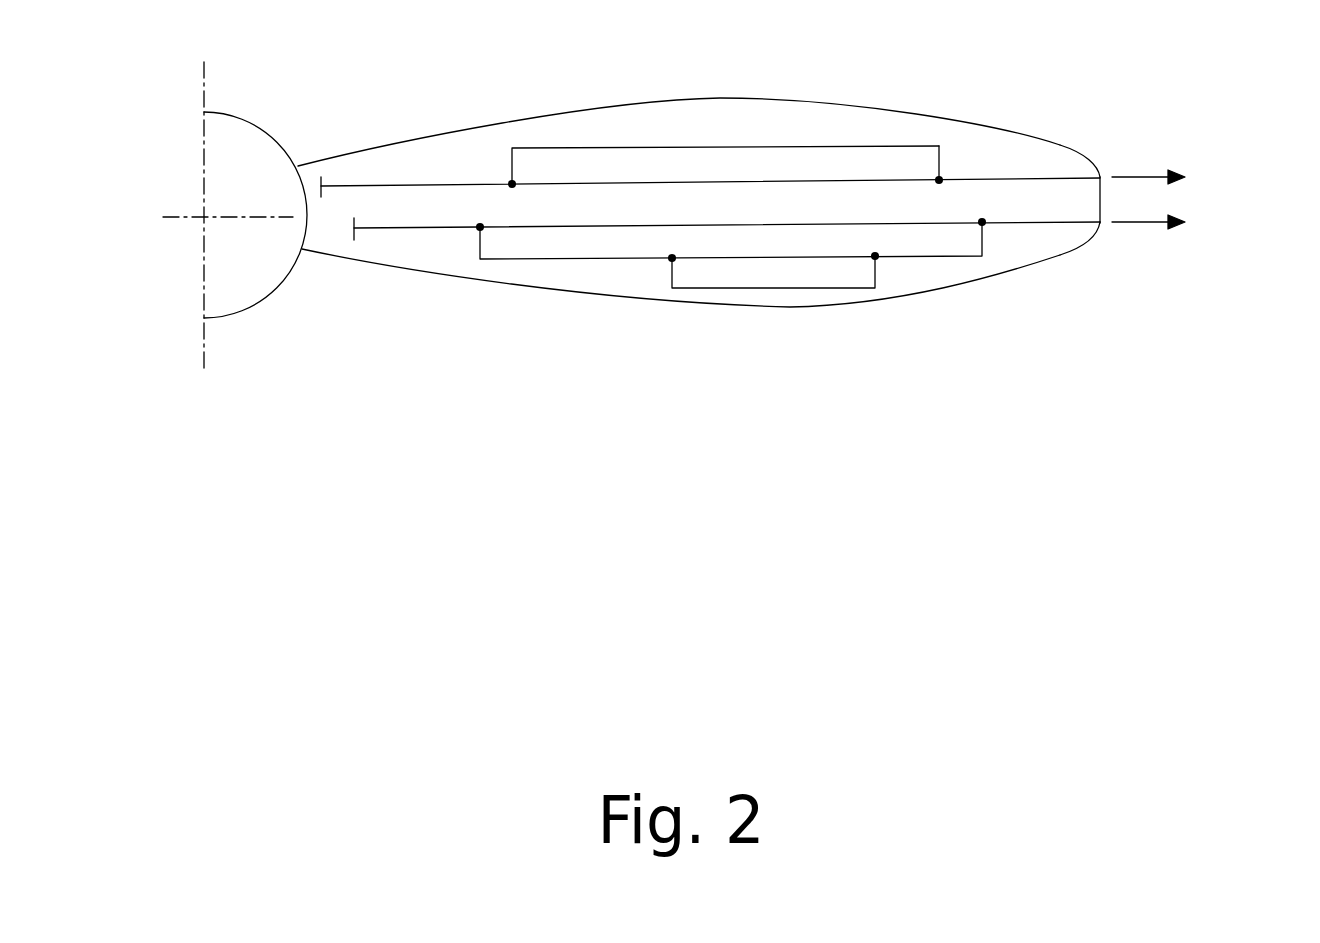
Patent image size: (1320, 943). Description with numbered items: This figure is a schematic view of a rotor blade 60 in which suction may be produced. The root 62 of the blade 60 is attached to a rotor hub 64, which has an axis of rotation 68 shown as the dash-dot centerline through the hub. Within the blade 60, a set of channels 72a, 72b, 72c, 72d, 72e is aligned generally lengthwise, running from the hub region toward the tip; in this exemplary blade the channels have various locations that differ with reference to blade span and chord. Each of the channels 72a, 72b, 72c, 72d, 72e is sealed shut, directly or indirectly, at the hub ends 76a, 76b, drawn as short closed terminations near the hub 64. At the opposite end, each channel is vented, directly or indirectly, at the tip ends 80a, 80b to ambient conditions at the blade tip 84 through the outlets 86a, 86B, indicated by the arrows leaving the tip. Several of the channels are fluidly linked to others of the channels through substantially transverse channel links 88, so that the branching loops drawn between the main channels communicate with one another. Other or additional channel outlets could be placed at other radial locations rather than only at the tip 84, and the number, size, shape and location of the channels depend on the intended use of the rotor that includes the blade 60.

The rotor blade 60 is at (689, 258).
The root 62 is at (325, 240).
The rotor hub 64 is at (250, 120).
The axis of rotation 68 is at (203, 217).
The channel 72a is at (463, 183).
The channel 72b is at (667, 148).
The channel 72c is at (445, 227).
The channel 72d is at (627, 260).
The channel 72e is at (837, 288).
The hub end 76a is at (322, 177).
The hub end 76b is at (355, 230).
The tip end 80a is at (1055, 145).
The tip end 80b is at (1057, 257).
The blade tip 84 is at (1112, 200).
The outlet 86a is at (1102, 175).
The outlet 86B is at (1102, 224).
The channel link 88 is at (939, 158).